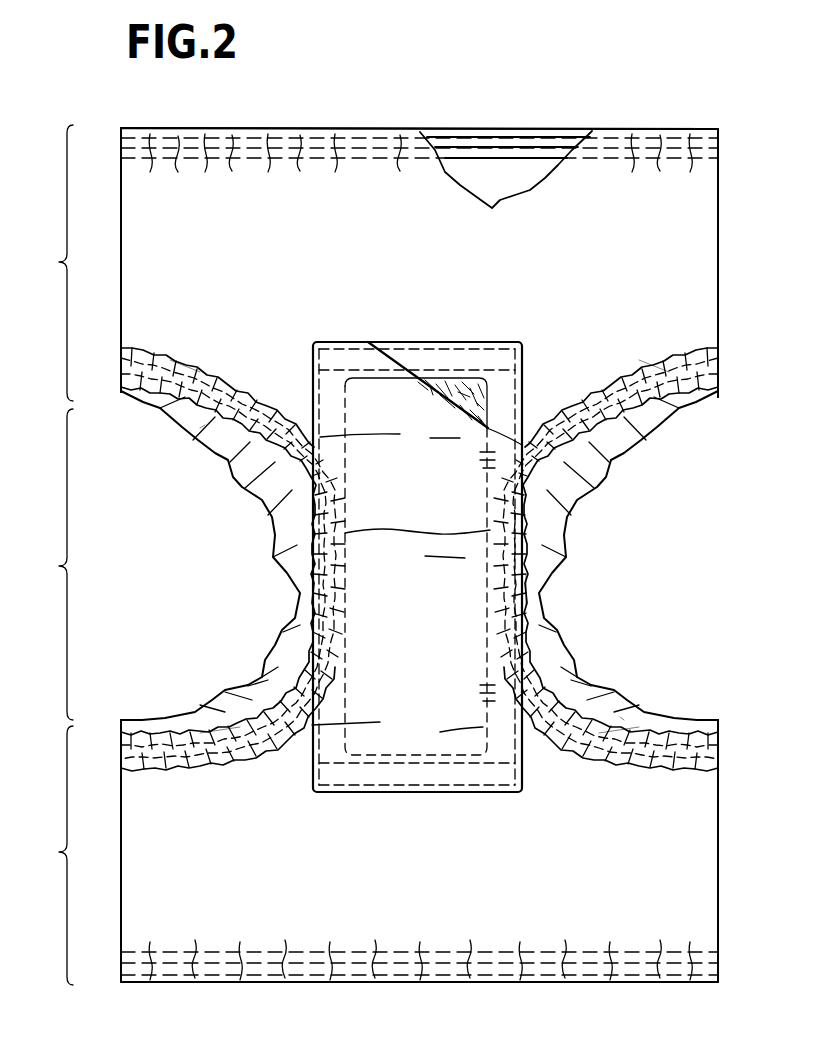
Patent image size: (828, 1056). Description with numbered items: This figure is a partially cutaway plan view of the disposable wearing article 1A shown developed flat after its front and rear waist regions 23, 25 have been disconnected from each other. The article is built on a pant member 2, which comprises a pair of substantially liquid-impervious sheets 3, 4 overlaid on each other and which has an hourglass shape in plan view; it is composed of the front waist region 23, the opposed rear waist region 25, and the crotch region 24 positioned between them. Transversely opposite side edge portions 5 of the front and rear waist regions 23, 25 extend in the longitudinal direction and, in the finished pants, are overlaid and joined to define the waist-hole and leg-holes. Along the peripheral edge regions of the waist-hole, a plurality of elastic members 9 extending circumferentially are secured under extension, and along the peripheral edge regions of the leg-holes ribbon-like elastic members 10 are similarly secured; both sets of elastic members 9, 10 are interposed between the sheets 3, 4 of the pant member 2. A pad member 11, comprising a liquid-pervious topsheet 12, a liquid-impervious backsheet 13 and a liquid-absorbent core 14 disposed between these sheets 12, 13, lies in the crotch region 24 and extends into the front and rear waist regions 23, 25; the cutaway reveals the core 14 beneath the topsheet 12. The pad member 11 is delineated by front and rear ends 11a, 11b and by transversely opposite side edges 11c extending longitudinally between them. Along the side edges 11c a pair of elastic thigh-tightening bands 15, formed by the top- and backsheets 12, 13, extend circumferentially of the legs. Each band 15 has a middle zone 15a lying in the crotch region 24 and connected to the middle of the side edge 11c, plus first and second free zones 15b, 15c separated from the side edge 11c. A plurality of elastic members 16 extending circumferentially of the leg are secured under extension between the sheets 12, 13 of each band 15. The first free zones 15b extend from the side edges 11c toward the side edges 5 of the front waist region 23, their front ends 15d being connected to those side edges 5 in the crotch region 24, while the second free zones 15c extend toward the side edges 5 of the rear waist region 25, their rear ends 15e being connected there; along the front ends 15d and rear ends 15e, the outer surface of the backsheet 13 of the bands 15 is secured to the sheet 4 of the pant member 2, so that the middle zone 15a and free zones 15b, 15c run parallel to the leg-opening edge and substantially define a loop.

The disposable wearing article 1A is at (646, 131).
The pant member 2 is at (718, 130).
The liquid-impervious sheet 3 is at (476, 178).
The liquid-impervious sheet 4 is at (372, 176).
The side edge portion 5 is at (121, 230).
The elastic members 9 is at (517, 150).
The ribbon-like elastic members 10 is at (276, 522).
The pad member 11 is at (318, 783).
The front end 11a is at (421, 775).
The rear end 11b is at (419, 355).
The side edge 11c is at (330, 403).
The liquid-pervious topsheet 12 is at (372, 398).
The liquid-impervious backsheet 13 is at (508, 395).
The liquid-absorbent core 14 is at (462, 385).
The elastic thigh-tightening band 15 is at (268, 462).
The middle zone 15a is at (290, 578).
The first free zone 15b is at (220, 728).
The second free zone 15c is at (180, 394).
The front end 15d is at (122, 752).
The rear end 15e is at (124, 353).
The elastic members 16 is at (226, 444).
The front waist region 23 is at (47, 855).
The crotch region 24 is at (47, 564).
The rear waist region 25 is at (47, 263).